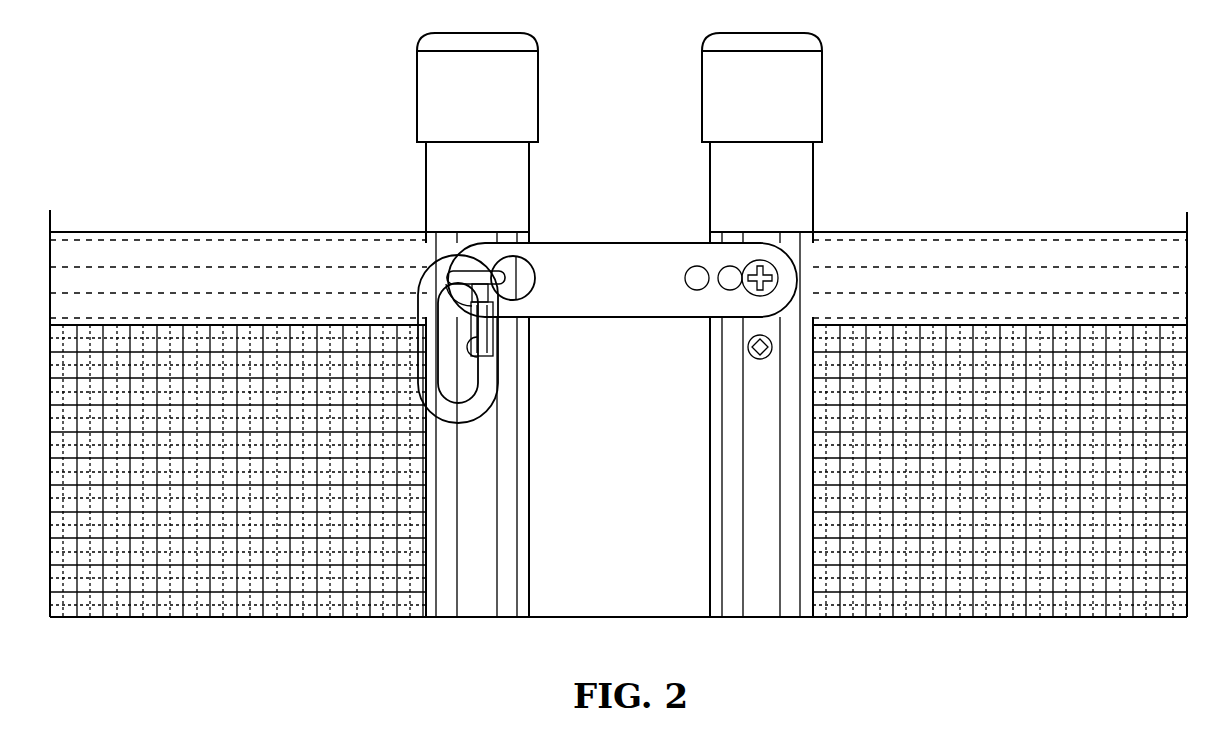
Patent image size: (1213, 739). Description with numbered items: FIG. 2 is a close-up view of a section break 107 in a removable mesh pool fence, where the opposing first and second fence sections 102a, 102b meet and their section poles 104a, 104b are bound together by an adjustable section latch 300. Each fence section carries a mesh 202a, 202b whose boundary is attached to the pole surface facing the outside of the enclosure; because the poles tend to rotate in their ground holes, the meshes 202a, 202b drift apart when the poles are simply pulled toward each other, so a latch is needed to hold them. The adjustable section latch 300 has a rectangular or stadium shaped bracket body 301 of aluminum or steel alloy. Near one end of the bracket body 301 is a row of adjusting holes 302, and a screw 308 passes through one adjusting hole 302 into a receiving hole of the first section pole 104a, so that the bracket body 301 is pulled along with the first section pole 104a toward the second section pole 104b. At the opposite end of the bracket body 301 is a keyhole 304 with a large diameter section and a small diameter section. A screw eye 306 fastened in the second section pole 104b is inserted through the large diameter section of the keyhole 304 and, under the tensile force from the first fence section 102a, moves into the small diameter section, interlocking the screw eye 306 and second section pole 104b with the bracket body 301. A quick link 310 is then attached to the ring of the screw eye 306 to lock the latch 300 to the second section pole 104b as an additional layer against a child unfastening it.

The first fence section 102a is at (1003, 400).
The second fence section 102b is at (243, 400).
The first section pole 104a is at (775, 325).
The second section pole 104b is at (474, 325).
The section break 107 is at (672, 588).
The mesh 202a is at (725, 505).
The mesh 202b is at (510, 535).
The adjustable section latch 300 is at (668, 304).
The bracket body 301 is at (608, 307).
The adjusting hole 302 is at (730, 292).
The keyhole 304 is at (533, 275).
The screw eye 306 is at (460, 280).
The screw 308 is at (778, 278).
The quick link 310 is at (483, 405).